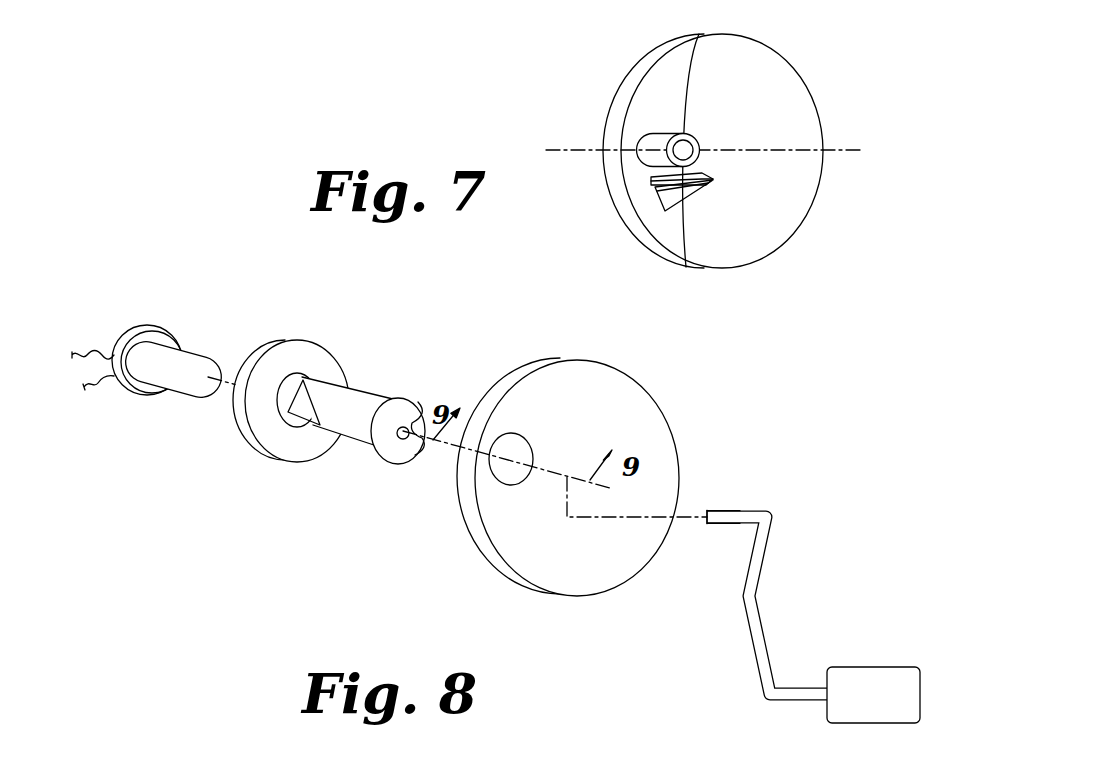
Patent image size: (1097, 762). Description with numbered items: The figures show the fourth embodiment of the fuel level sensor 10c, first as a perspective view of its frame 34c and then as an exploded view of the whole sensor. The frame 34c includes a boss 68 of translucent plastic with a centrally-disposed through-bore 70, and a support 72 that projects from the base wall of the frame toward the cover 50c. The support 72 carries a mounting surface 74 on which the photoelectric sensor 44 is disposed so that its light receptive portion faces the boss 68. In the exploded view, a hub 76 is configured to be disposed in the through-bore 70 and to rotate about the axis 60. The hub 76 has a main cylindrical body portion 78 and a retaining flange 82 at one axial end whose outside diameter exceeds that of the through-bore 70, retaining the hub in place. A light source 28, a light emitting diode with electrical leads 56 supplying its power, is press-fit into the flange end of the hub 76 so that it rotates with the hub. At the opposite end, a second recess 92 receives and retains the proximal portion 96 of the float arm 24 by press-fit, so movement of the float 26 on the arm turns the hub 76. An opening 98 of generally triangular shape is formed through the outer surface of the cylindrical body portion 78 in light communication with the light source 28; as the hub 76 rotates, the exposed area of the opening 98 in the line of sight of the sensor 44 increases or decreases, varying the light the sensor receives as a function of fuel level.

In FIG. 8, the fuel level sensor 10c is at (657, 532).
In FIG. 8, the float arm 24 is at (748, 612).
In FIG. 8, the float 26 is at (850, 667).
In FIG. 8, the light source 28 is at (193, 351).
In FIG. 7, the frame 34c is at (826, 196).
In FIG. 8, the frame 34c is at (576, 477).
In FIG. 7, the photoelectric sensor 44 is at (710, 176).
In FIG. 8, the cover 50c is at (673, 427).
In FIG. 8, the electrical leads 56 is at (107, 387).
In FIG. 7, the axis 60 is at (832, 148).
In FIG. 7, the boss 68 is at (648, 129).
In FIG. 7, the through-bore 70 is at (683, 133).
In FIG. 8, the through-bore 70 is at (510, 444).
In FIG. 7, the support 72 is at (686, 267).
In FIG. 7, the mounting surface 74 is at (656, 188).
In FIG. 8, the hub 76 is at (339, 398).
In FIG. 8, the main cylindrical body portion 78 is at (362, 388).
In FIG. 8, the retaining flange 82 is at (252, 357).
In FIG. 8, the second recess 92 is at (403, 439).
In FIG. 8, the proximal portion 96 is at (723, 523).
In FIG. 8, the opening 98 is at (296, 411).